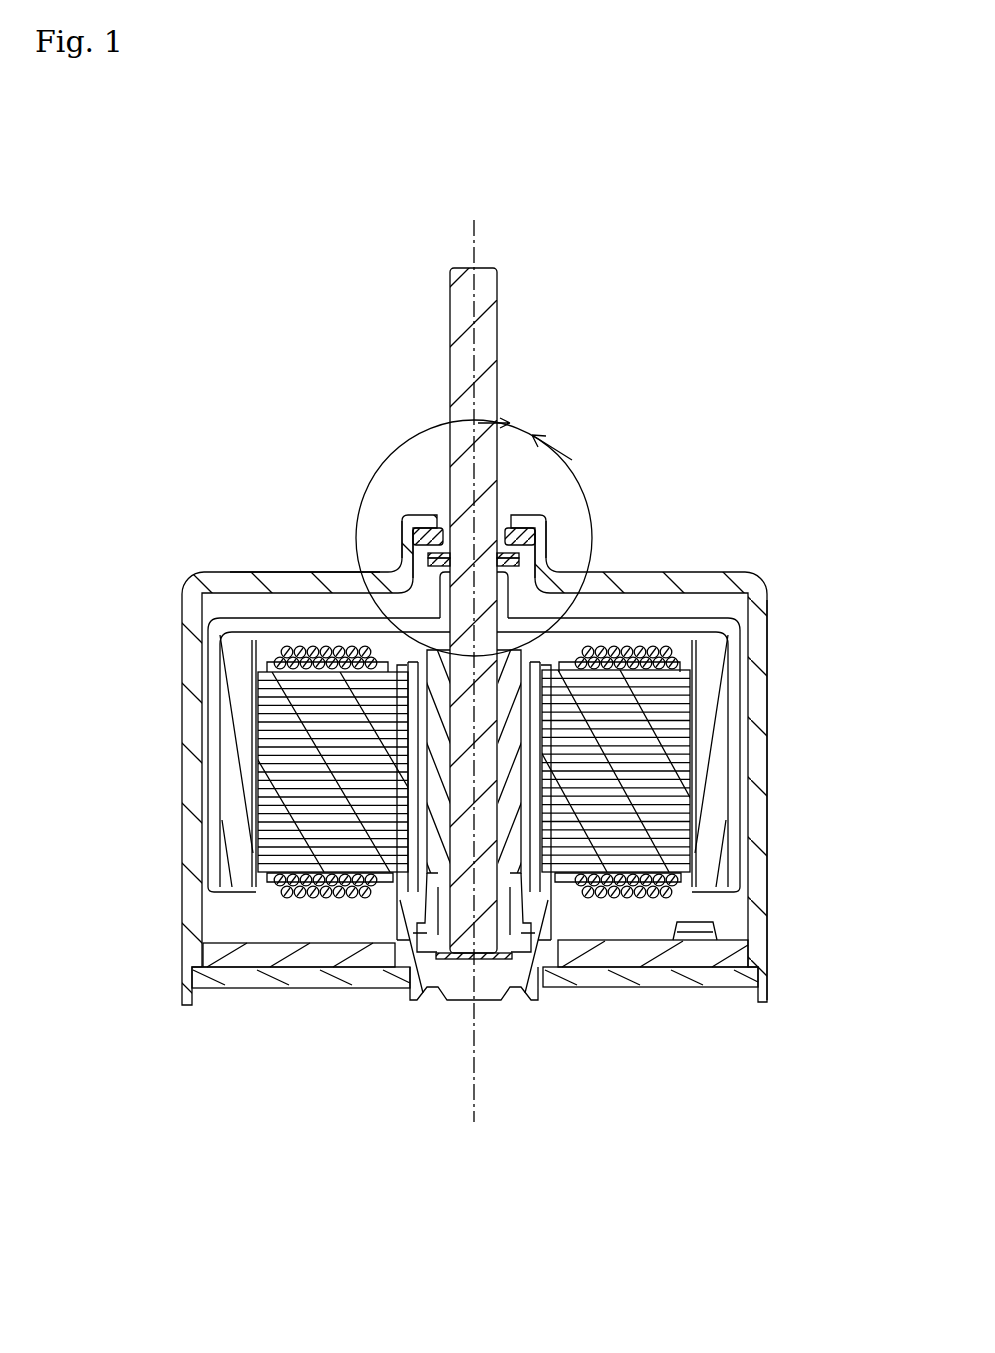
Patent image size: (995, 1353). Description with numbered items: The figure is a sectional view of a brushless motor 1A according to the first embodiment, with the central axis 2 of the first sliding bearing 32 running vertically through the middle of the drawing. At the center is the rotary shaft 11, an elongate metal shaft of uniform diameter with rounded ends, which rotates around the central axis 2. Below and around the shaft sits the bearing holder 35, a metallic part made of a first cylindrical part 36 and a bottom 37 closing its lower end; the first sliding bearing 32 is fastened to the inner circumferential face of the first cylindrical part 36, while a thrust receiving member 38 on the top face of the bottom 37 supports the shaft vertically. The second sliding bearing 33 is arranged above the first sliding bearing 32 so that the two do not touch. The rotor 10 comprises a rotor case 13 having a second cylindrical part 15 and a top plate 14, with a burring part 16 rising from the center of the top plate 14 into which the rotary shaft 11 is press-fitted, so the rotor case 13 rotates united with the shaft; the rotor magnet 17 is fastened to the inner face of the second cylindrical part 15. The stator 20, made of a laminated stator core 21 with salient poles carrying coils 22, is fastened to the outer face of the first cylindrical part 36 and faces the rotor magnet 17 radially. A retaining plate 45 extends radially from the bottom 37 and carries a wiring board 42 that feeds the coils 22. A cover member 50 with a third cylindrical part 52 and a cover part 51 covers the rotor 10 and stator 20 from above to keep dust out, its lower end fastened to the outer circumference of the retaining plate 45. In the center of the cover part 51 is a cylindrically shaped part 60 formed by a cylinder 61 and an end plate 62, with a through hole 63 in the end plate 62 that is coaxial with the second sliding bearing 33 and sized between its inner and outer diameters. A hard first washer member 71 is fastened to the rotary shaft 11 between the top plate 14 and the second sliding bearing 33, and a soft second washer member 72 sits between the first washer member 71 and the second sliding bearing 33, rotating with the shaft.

The brushless motor 1A is at (630, 412).
The central axis 2 is at (471, 250).
The rotor 10 is at (724, 598).
The rotary shaft 11 is at (488, 333).
The rotor case 13 is at (754, 602).
The top plate 14 is at (664, 627).
The second cylindrical part 15 is at (743, 712).
The burring part 16 is at (446, 600).
The rotor magnet 17 is at (237, 686).
The stator 20 is at (594, 908).
The stator core 21 is at (283, 842).
The coils 22 is at (306, 650).
The first sliding bearing 32 is at (423, 900).
The second sliding bearing 33 is at (512, 527).
The bearing holder 35 is at (438, 977).
The first cylindrical part 36 is at (529, 900).
The bottom 37 is at (468, 980).
The thrust receiving member 38 is at (490, 966).
The wiring board 42 is at (255, 958).
The retaining plate 45 is at (713, 974).
The cover member 50 is at (755, 584).
The cover part 51 is at (300, 584).
The third cylindrical part 52 is at (761, 806).
The cylindrically shaped part 60 is at (412, 515).
The cylinder 61 is at (411, 560).
The end plate 62 is at (423, 515).
The through hole 63 is at (504, 514).
The first washer member 71 is at (524, 562).
The second washer member 72 is at (524, 556).